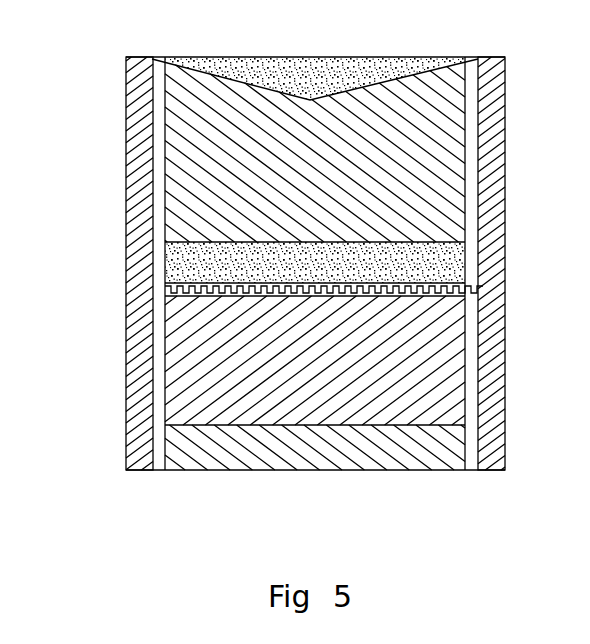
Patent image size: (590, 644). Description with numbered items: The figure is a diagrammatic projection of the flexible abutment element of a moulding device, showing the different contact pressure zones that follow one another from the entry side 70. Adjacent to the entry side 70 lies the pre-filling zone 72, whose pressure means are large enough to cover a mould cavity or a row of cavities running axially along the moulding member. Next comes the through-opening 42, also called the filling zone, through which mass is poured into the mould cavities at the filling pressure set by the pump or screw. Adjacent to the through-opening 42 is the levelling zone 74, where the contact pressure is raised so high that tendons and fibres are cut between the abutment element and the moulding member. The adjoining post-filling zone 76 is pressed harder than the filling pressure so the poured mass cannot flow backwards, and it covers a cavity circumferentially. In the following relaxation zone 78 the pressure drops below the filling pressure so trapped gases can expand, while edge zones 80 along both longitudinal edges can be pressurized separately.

The through-opening 42 is at (278, 265).
The entry side 70 is at (283, 72).
The pre-filling zone 72 is at (270, 152).
The levelling zone 74 is at (203, 290).
The post-filling zone 76 is at (205, 370).
The relaxation zone 78 is at (215, 447).
The edge zones 80 is at (137, 451).